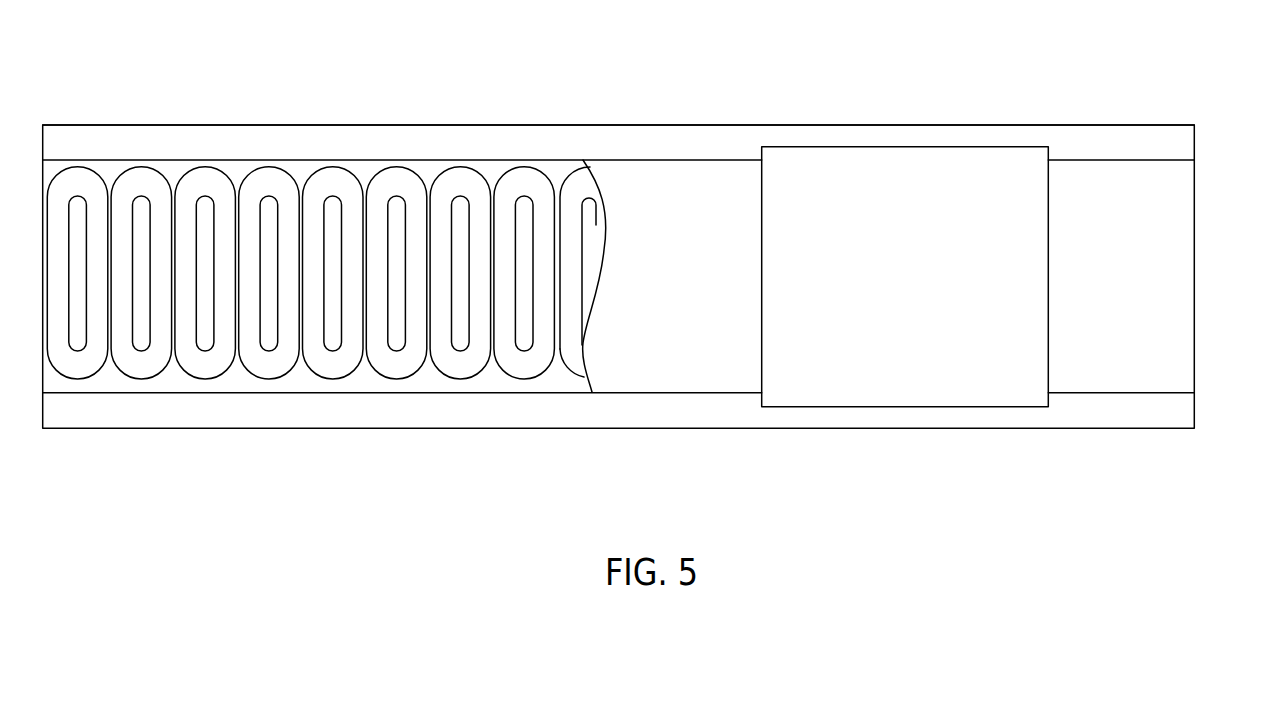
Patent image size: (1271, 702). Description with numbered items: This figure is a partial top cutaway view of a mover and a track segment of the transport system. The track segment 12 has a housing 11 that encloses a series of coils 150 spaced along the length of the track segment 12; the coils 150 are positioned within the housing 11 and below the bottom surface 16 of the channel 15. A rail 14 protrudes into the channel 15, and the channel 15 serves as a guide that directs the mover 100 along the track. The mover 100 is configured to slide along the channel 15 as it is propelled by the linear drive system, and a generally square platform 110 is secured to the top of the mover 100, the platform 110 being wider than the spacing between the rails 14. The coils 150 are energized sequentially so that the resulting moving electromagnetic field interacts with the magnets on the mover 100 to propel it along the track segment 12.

The housing 11 is at (994, 441).
The track segment 12 is at (625, 145).
The rail 14 is at (540, 143).
The channel 15 is at (1168, 323).
The bottom surface 16 is at (690, 283).
The mover 100 is at (887, 198).
The platform 110 is at (942, 277).
The coils 150 is at (272, 178).